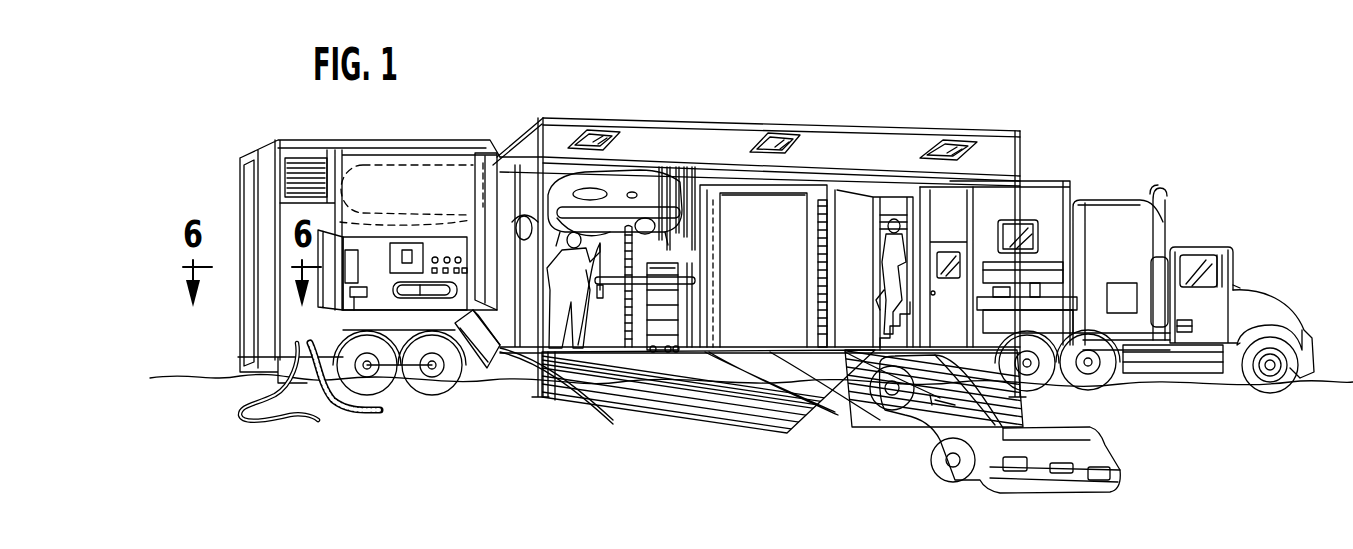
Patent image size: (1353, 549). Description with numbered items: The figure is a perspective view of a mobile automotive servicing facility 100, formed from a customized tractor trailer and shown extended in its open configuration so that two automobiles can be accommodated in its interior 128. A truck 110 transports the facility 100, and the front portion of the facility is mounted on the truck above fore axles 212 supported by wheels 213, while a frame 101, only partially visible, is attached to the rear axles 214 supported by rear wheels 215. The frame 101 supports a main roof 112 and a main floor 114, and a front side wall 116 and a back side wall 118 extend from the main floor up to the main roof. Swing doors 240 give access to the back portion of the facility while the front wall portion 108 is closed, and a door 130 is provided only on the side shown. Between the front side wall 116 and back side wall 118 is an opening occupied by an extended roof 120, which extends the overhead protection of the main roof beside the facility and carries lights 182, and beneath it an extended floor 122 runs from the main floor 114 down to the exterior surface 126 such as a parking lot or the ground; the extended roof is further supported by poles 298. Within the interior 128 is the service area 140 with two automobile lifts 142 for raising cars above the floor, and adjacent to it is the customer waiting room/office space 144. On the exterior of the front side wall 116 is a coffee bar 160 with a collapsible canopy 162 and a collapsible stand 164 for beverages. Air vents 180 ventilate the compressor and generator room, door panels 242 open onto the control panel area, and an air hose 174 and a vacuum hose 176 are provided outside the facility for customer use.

The mobile automotive servicing facility 100 is at (768, 108).
The frame 101 is at (517, 392).
The front wall portion 108 is at (1055, 250).
The truck 110 is at (1133, 222).
The main roof 112 is at (370, 142).
The main floor 114 is at (623, 355).
The front side wall 116 is at (1035, 200).
The back side wall 118 is at (481, 162).
The extended roof 120 is at (895, 207).
The extended floor 122 is at (572, 393).
The exterior surface 126 is at (817, 478).
The interior 128 is at (747, 203).
The door 130 is at (1042, 192).
The service area 140 is at (773, 278).
The automobile lifts 142 is at (684, 355).
The customer waiting room/office space 144 is at (920, 197).
The coffee bar 160 is at (1097, 203).
The collapsible canopy 162 is at (1103, 270).
The collapsible stand 164 is at (1100, 305).
The air hose 174 is at (282, 427).
The hose 176 is at (352, 412).
The air vents 180 is at (302, 166).
The lights 182 is at (612, 142).
The fore axles 212 is at (1035, 382).
The wheels 213 is at (1095, 385).
The rear axles 214 is at (433, 372).
The rear wheels 215 is at (373, 392).
The swing doors 240 is at (247, 190).
The door panels 242 is at (488, 158).
The poles 298 is at (548, 140).